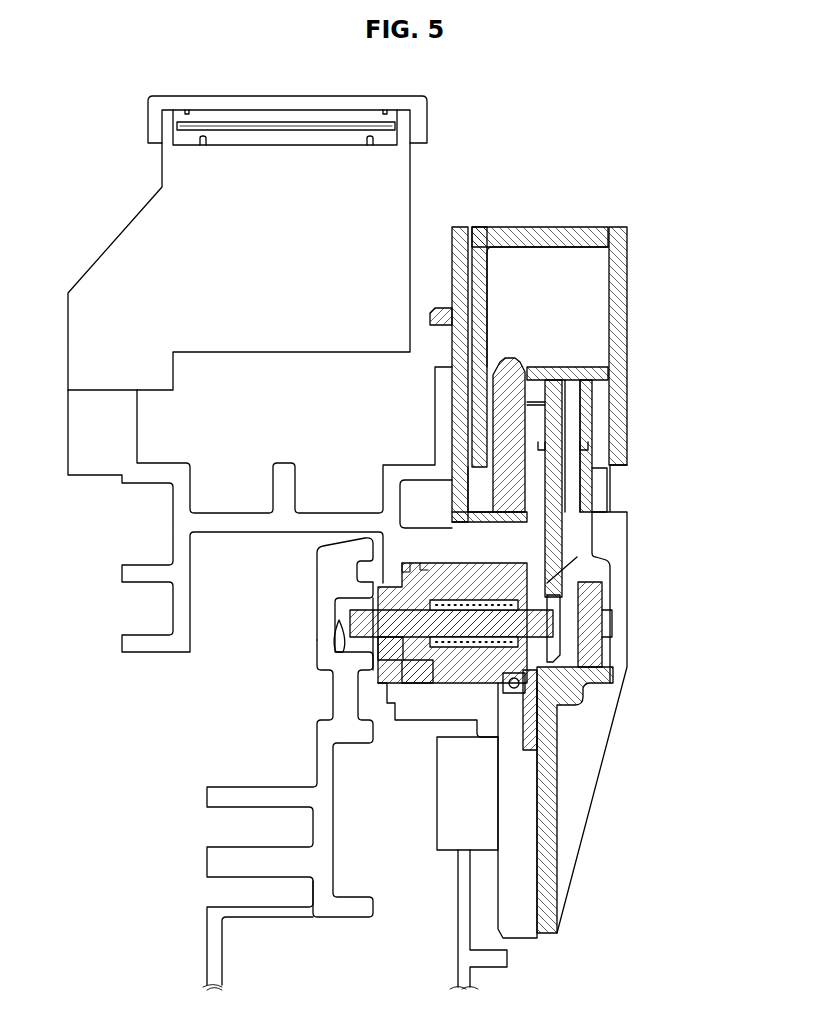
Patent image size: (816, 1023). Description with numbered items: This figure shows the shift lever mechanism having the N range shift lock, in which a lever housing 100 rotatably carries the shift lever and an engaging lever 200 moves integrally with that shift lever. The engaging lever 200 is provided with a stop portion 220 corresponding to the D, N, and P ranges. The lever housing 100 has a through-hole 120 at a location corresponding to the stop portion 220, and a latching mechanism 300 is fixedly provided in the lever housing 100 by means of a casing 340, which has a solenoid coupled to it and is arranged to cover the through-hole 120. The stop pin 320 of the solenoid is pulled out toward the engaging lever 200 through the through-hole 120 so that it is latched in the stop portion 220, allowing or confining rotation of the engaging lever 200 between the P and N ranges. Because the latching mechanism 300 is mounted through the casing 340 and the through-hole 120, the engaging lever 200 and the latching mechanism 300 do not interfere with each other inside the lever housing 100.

The lever housing 100 is at (138, 242).
The through-hole 120 is at (390, 652).
The engaging lever 200 is at (318, 858).
The stop portion 220 is at (345, 636).
The latching mechanism 300 is at (643, 643).
The stop pin 320 is at (363, 617).
The casing 340 is at (617, 528).